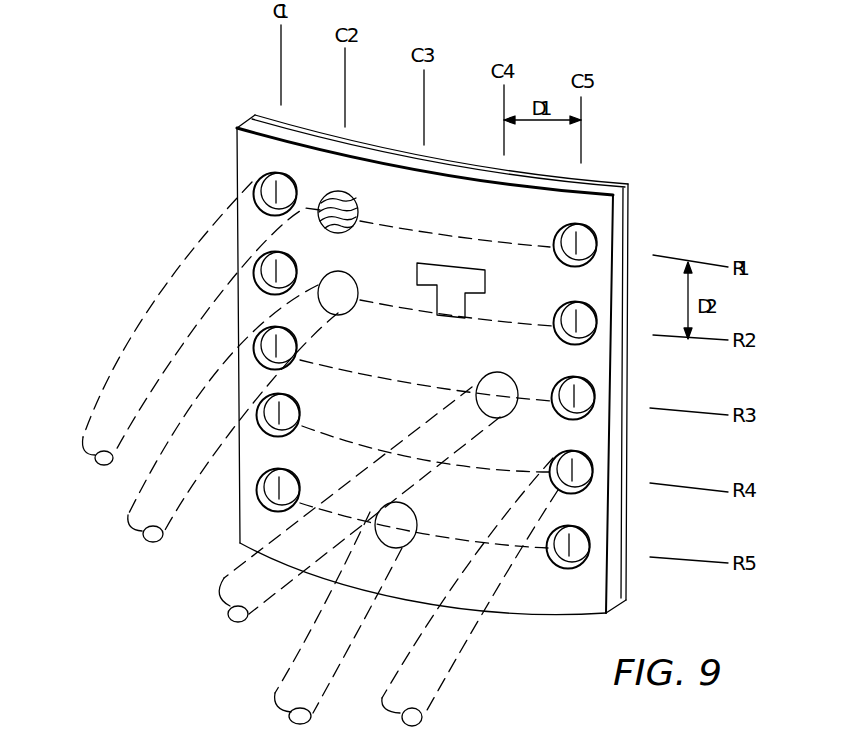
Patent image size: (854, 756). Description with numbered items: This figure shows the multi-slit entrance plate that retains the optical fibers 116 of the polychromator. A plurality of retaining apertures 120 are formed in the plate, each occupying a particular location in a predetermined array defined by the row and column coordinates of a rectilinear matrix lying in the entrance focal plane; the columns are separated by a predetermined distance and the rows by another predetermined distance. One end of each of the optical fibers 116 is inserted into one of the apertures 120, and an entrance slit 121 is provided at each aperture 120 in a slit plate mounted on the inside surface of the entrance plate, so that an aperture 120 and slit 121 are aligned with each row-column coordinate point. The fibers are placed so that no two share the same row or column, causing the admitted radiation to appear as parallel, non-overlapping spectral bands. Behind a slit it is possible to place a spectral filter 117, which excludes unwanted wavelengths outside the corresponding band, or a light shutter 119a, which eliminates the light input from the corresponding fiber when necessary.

The optical fibers 116 is at (140, 322).
The spectral filter 117 is at (364, 206).
The light shutter 119a is at (417, 280).
The retaining apertures 120 is at (560, 318).
The entrance slit 121 is at (562, 243).